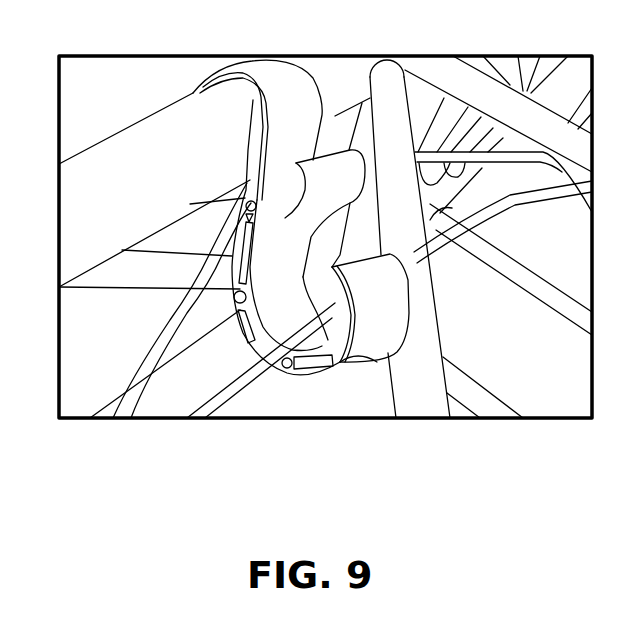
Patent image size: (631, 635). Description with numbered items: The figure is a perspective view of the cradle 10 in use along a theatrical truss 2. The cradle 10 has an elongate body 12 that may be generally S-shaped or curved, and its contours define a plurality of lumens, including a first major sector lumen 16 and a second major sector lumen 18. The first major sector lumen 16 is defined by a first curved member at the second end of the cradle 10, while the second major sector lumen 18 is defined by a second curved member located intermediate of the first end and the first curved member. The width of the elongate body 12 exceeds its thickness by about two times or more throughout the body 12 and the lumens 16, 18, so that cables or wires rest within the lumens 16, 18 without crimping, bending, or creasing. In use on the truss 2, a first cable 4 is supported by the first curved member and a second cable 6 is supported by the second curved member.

The theatrical truss 2 is at (71, 212).
The first cable 4 is at (190, 407).
The second cable 6 is at (130, 404).
The cradle 10 is at (292, 458).
The elongate body 12 is at (380, 368).
The first major sector lumen 16 is at (256, 338).
The second major sector lumen 18 is at (298, 122).